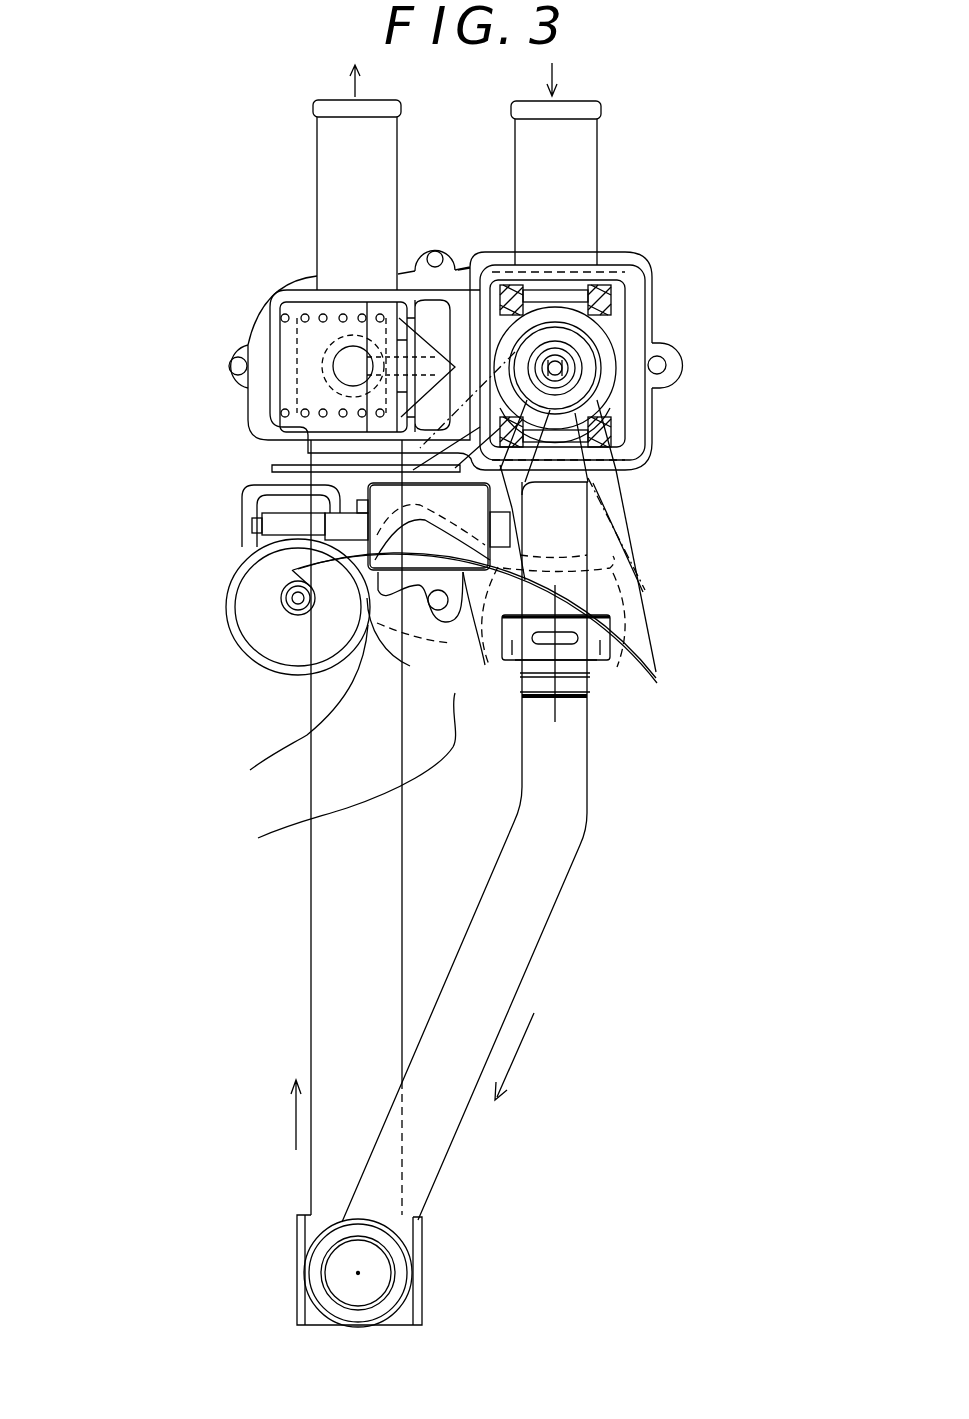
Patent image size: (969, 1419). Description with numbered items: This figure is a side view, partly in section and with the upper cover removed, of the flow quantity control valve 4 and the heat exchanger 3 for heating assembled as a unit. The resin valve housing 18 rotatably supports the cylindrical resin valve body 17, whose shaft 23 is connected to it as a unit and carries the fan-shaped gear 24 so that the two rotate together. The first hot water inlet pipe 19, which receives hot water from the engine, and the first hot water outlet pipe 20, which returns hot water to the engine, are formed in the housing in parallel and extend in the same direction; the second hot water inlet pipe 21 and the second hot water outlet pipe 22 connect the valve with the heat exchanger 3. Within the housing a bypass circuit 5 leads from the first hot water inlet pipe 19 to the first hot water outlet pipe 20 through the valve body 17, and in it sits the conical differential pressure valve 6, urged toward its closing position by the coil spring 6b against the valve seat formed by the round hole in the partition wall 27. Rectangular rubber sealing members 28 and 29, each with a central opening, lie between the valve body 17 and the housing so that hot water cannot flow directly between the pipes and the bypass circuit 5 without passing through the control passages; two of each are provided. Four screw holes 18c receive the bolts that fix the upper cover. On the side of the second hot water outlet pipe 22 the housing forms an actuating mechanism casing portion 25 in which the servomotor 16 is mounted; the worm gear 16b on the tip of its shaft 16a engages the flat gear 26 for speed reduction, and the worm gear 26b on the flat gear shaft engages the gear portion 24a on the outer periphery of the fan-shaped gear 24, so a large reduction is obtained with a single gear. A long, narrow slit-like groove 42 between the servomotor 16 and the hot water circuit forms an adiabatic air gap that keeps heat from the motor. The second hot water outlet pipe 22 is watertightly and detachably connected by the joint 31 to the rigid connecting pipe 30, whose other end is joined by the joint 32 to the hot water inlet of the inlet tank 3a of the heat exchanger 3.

The heat exchanger 3 is at (292, 909).
The inlet tank 3a is at (297, 1251).
The flow quantity control valve 4 is at (506, 216).
The bypass circuit 5 is at (460, 266).
The differential pressure valve 6 is at (440, 300).
The coil spring 6b is at (325, 340).
The servomotor 16 is at (330, 737).
The shaft 16a is at (245, 489).
The worm gear 16b is at (256, 513).
The valve body 17 is at (600, 348).
The valve housing 18 is at (640, 260).
The screw holes 18c is at (228, 368).
The first hot water inlet pipe 19 is at (577, 153).
The first hot water outlet pipe 20 is at (340, 192).
The second hot water inlet pipe 21 is at (330, 360).
The second hot water outlet pipe 22 is at (563, 525).
The shaft 23 is at (575, 374).
The fan-shaped gear 24 is at (657, 672).
The gear portion 24a is at (325, 815).
The actuating mechanism casing portion 25 is at (262, 673).
The flat gear 26 is at (258, 586).
The worm gear 26b is at (287, 604).
The partition wall 27 is at (452, 362).
The sealing member 28 is at (605, 298).
The sealing member 29 is at (618, 438).
The connecting pipe 30 is at (527, 893).
The joint 31 is at (573, 607).
The joint 32 is at (410, 1287).
The slit-like groove 42 is at (310, 465).